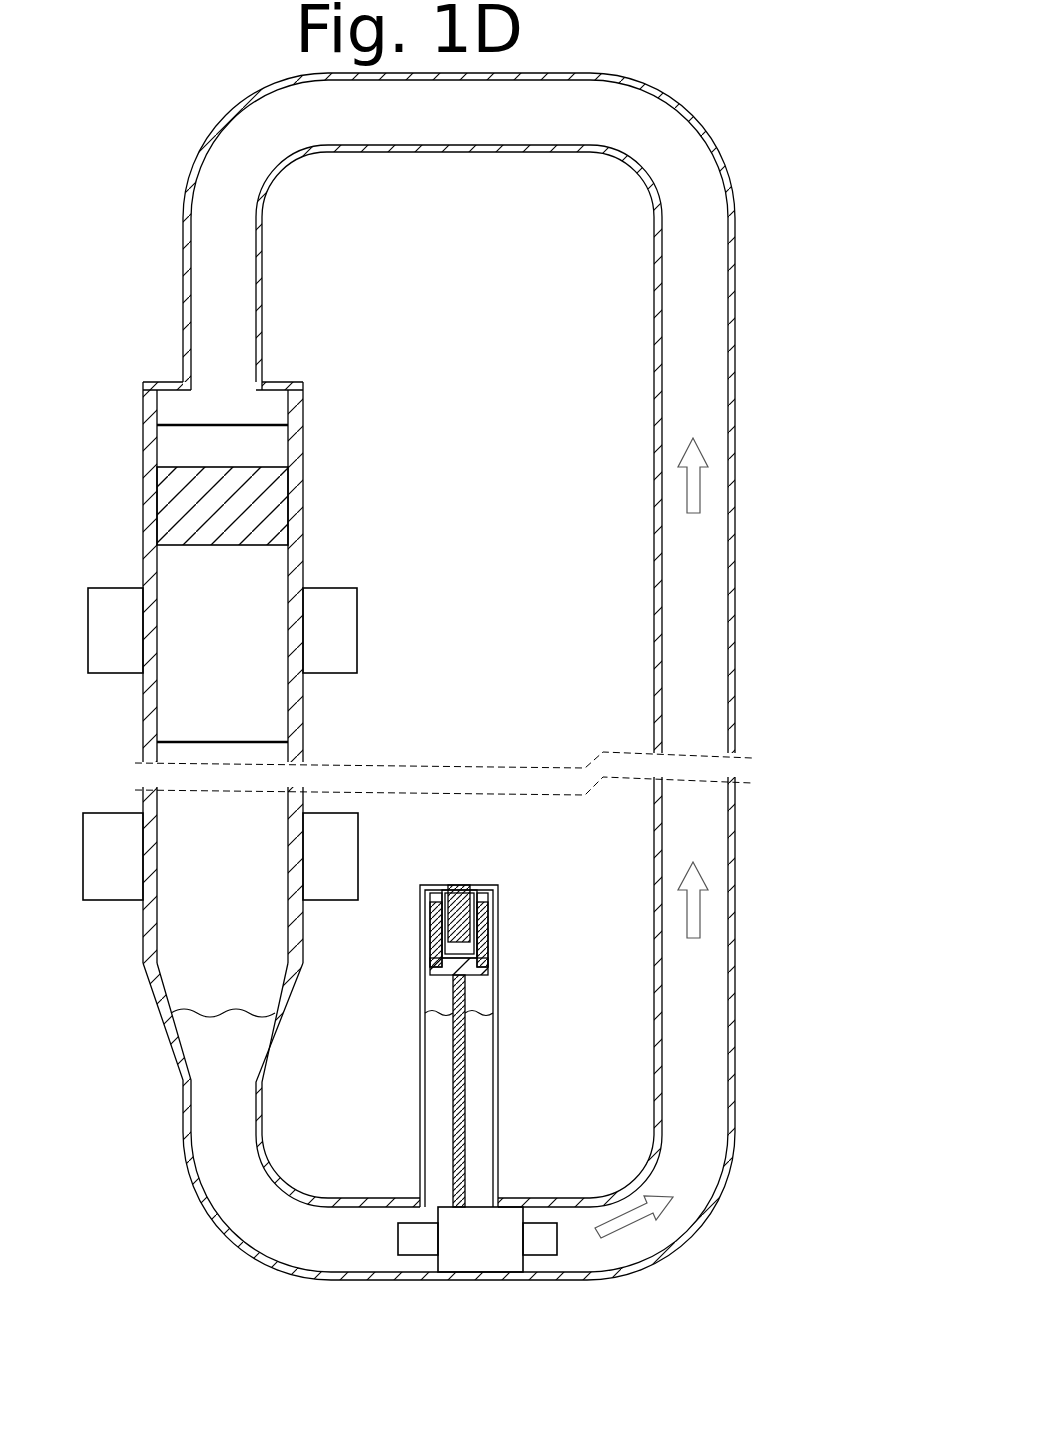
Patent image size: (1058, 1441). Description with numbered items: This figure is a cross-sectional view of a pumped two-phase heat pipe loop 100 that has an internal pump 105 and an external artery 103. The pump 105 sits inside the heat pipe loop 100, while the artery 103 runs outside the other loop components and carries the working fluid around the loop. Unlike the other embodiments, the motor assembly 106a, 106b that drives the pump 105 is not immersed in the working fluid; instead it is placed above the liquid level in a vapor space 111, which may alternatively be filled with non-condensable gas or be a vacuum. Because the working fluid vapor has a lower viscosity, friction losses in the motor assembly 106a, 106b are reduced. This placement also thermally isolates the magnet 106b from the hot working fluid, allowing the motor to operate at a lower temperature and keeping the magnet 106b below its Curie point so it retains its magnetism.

The pumped two-phase heat pipe loop 100 is at (170, 123).
The artery 103 is at (737, 437).
The pump 105 is at (470, 1244).
The motor assembly 106a is at (489, 915).
The magnet 106b is at (433, 965).
The vapor space 111 is at (473, 985).